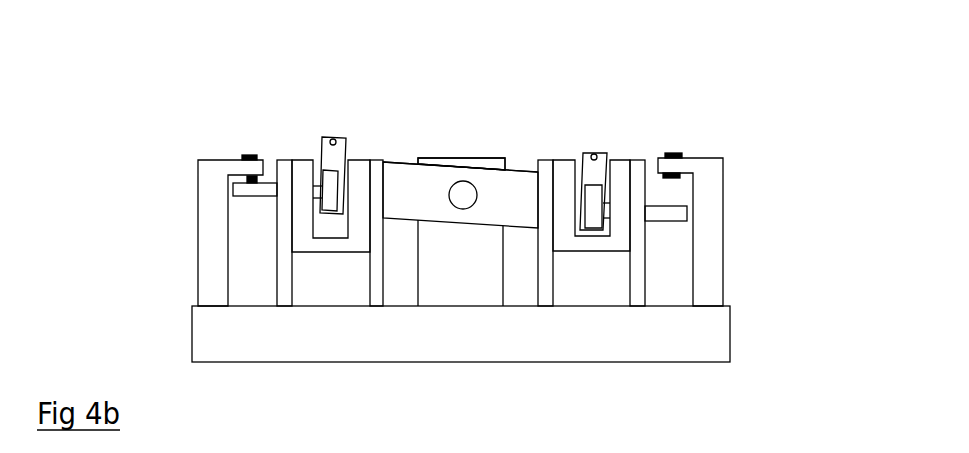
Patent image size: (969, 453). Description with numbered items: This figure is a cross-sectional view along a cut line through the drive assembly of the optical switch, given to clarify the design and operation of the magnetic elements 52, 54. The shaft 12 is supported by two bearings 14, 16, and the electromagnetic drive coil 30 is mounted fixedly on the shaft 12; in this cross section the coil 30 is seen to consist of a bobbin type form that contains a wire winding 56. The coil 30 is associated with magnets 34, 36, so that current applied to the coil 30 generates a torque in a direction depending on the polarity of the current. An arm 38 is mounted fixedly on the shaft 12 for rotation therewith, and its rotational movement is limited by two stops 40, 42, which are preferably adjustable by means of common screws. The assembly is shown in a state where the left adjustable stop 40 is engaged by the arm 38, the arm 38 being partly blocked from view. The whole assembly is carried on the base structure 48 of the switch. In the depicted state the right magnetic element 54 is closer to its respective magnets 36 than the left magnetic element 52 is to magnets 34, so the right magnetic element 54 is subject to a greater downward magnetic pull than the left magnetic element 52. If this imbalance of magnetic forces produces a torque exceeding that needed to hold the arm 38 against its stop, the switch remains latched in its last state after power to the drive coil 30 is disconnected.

The shaft 12 is at (474, 184).
The bearing 14 is at (465, 157).
The bearing 16 is at (461, 164).
The electromagnetic coil 30 is at (402, 160).
The magnets 34 is at (298, 215).
The magnets 36 is at (562, 157).
The arm 38 is at (231, 184).
The adjustable stop 40 is at (243, 157).
The adjustable stop 42 is at (673, 153).
The base structure 48 is at (716, 328).
The magnetic element 52 is at (334, 139).
The magnetic element 54 is at (596, 152).
The wire winding 56 is at (292, 160).